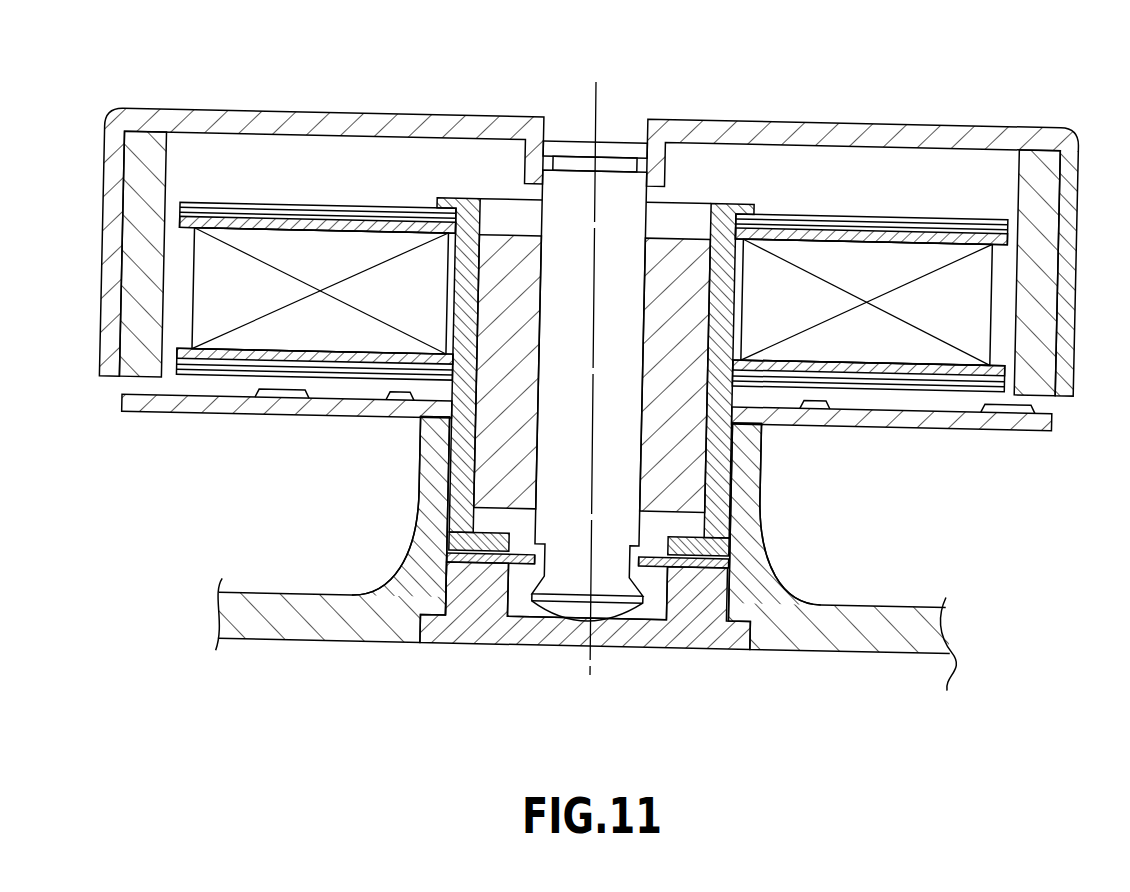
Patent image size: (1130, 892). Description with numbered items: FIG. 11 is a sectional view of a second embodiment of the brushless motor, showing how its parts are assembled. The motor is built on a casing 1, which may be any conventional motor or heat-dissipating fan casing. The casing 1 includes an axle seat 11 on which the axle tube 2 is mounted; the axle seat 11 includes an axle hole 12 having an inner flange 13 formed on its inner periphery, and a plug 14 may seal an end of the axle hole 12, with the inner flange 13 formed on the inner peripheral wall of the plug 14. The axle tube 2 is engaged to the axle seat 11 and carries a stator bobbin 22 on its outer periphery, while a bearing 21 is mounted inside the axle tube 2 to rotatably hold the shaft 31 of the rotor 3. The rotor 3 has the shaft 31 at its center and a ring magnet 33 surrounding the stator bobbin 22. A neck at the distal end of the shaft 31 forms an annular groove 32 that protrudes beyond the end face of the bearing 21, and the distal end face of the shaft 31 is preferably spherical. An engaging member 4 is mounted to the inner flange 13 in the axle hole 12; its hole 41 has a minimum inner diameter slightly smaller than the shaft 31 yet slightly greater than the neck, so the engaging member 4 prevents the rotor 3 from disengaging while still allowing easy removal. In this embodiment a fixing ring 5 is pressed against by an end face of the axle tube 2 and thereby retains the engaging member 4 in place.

The casing 1 is at (283, 607).
The axle seat 11 is at (427, 512).
The axle hole 12 is at (732, 440).
The inner flange 13 is at (487, 567).
The plug 14 is at (477, 607).
The axle tube 2 is at (462, 205).
The bearing 21 is at (687, 243).
The stator bobbin 22 is at (877, 223).
The rotor 3 is at (986, 138).
The shaft 31 is at (582, 198).
The annular groove 32 is at (607, 587).
The ring magnet 33 is at (1047, 157).
The engaging member 4 is at (653, 573).
The hole 41 is at (633, 565).
The fixing ring 5 is at (723, 548).